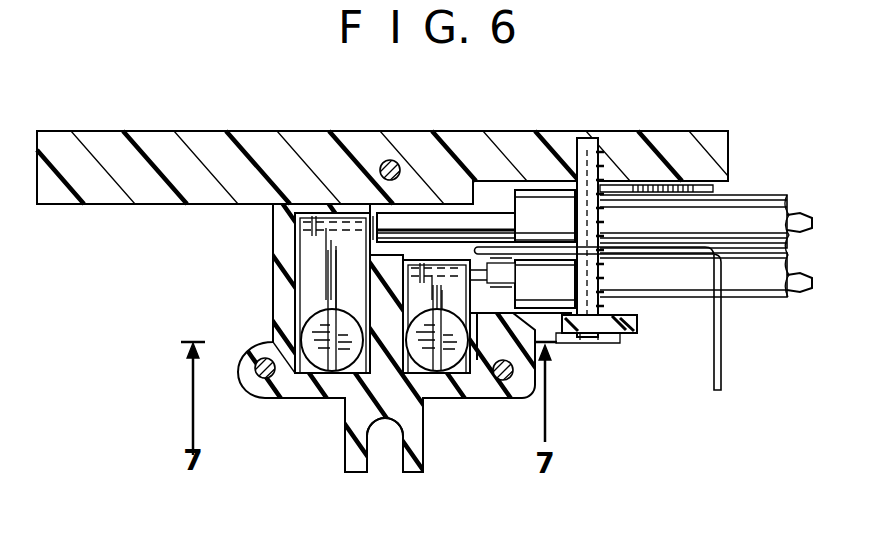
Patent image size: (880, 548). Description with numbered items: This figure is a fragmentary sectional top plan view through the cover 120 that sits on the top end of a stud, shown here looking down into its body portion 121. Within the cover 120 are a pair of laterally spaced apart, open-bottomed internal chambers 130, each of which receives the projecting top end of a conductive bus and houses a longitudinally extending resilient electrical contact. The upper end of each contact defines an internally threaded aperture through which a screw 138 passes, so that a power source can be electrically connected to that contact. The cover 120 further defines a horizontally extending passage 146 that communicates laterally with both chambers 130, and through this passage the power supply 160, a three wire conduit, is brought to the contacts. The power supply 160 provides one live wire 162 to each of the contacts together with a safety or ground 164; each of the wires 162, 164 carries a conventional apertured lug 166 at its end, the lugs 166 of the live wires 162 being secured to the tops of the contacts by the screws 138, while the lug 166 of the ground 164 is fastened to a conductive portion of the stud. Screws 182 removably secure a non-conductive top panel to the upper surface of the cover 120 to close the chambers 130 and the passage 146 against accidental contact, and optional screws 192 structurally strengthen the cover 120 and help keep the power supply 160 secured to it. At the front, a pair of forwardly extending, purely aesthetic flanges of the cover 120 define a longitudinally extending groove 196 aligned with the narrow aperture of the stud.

The cover 120 is at (283, 131).
The body portion 121 is at (290, 381).
The internal chambers 130 is at (280, 280).
The screw 138 is at (320, 383).
The passage 146 is at (505, 198).
The power supply 160 is at (786, 189).
The live wire 162 is at (498, 272).
The ground 164 is at (723, 345).
The apertured lug 166 is at (437, 292).
The screws 182 is at (390, 159).
The screws 192 is at (598, 140).
The groove 196 is at (387, 438).